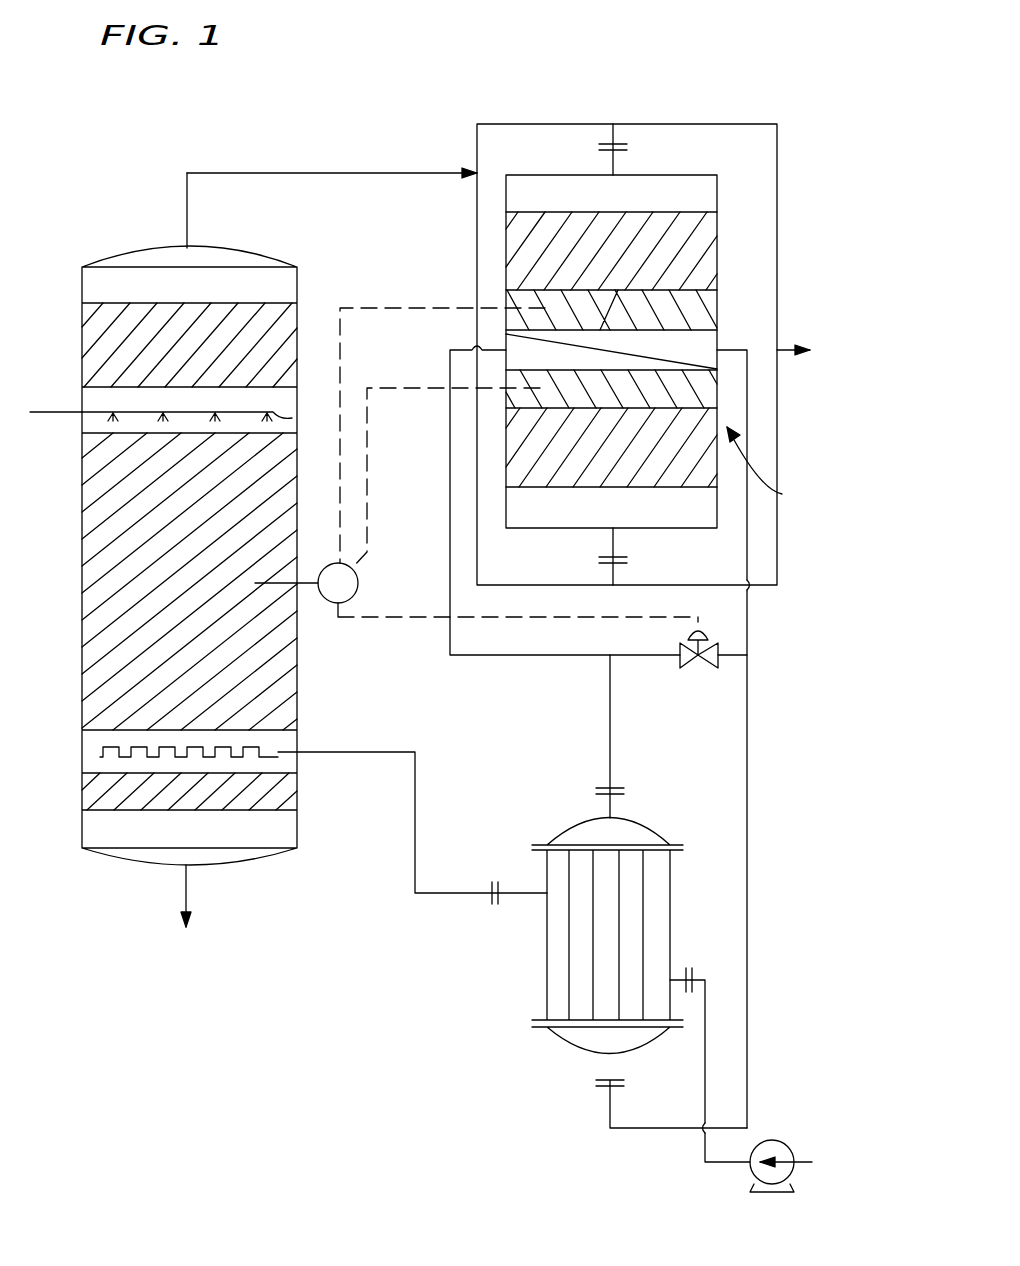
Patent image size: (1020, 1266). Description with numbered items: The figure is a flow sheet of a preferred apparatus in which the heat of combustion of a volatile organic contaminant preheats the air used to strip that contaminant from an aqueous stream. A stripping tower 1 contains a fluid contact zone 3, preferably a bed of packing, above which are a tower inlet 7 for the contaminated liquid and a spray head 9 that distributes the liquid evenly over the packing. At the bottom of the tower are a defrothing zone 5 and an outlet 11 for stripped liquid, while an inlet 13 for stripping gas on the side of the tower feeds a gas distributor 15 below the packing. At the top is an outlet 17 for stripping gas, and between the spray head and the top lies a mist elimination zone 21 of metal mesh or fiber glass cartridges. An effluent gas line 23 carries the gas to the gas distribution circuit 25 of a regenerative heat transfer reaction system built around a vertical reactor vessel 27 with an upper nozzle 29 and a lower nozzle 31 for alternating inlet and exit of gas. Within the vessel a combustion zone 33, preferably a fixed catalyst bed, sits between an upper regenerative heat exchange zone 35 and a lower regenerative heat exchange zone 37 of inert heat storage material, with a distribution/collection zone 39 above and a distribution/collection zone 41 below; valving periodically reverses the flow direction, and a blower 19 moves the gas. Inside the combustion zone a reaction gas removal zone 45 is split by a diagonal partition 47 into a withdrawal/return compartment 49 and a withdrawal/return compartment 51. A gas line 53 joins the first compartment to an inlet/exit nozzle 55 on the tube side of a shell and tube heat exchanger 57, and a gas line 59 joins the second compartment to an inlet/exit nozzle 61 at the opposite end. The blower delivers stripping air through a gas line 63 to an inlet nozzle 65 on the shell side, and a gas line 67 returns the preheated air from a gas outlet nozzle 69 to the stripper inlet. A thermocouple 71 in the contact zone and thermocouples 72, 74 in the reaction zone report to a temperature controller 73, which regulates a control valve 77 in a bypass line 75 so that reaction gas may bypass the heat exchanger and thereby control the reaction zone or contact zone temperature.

The stripping tower 1 is at (70, 322).
The fluid contact zone 3 is at (97, 537).
The defrothing zone 5 is at (112, 793).
The tower inlet 7 is at (57, 414).
The spray head 9 is at (292, 418).
The outlet 11 is at (186, 896).
The inlet 13 is at (325, 752).
The gas distributor 15 is at (100, 752).
The outlet 17 is at (187, 200).
The blower 19 is at (788, 1140).
The mist elimination zone 21 is at (290, 326).
The effluent gas line 23 is at (335, 173).
The gas distribution circuit 25 is at (470, 130).
The vertical reactor vessel 27 is at (661, 351).
The upper nozzle 29 is at (618, 148).
The lower nozzle 31 is at (620, 554).
The combustion zone 33 is at (515, 300).
The regenerative heat exchange zone 35 is at (520, 232).
The regenerative heat exchange zone 37 is at (522, 470).
The distribution/collection zone 39 is at (685, 195).
The distribution/collection zone 41 is at (572, 520).
The reaction gas removal zone 45 is at (722, 340).
The diagonal partition 47 is at (645, 330).
The withdrawal/return compartment 49 is at (712, 335).
The withdrawal/return compartment 51 is at (505, 337).
The gas line 53 is at (790, 820).
The inlet/exit nozzle 55 is at (600, 1084).
The shell and tube heat exchanger 57 is at (547, 968).
The gas line 59 is at (449, 492).
The inlet/exit nozzle 61 is at (620, 790).
The gas line 63 is at (705, 1085).
The inlet nozzle 65 is at (694, 972).
The gas line 67 is at (468, 893).
The gas outlet nozzle 69 is at (492, 885).
The thermocouple 71 is at (280, 583).
The thermocouple 72 is at (392, 300).
The temperature controller 73 is at (352, 598).
The thermocouple 74 is at (388, 380).
The bypass line 75 is at (732, 660).
The control valve 77 is at (698, 670).